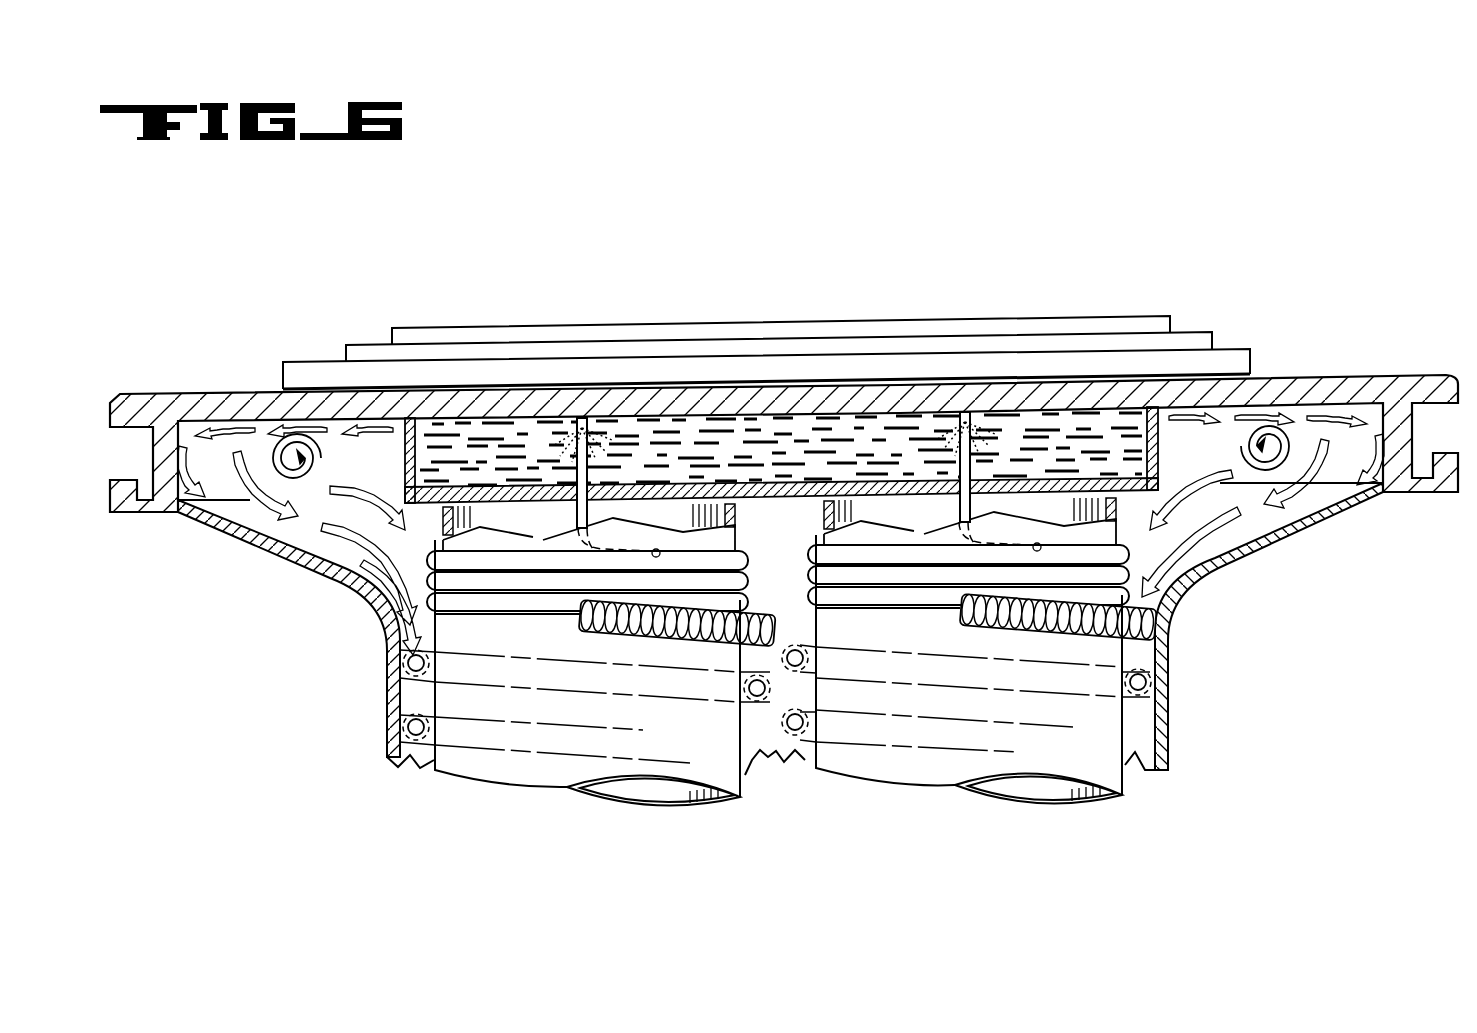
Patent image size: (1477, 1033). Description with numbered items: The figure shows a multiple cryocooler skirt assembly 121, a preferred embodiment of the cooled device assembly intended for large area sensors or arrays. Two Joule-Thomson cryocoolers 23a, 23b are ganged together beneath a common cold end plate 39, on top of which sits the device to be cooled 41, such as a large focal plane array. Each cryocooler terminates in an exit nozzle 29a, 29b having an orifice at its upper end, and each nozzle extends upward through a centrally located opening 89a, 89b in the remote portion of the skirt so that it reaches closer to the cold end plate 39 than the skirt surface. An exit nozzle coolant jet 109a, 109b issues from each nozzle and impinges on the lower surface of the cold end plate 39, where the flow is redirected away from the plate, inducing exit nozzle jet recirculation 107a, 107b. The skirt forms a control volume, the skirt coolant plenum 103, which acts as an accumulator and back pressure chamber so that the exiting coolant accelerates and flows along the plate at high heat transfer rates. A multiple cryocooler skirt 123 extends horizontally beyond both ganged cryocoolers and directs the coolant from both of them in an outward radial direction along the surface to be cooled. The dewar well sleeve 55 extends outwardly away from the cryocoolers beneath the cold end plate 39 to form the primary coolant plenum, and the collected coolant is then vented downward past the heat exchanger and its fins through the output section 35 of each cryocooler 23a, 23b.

The multiple cryocooler skirt assembly 121 is at (262, 326).
The cold end plate 39 is at (238, 440).
The exit nozzle 29a is at (577, 470).
The exit nozzle 29b is at (975, 465).
The device to be cooled 41 is at (777, 304).
The skirt coolant plenum 103 is at (800, 443).
The exit nozzle jet recirculation 107a is at (566, 398).
The exit nozzle jet recirculation 107b is at (993, 398).
The exit nozzle coolant jet 109a is at (580, 400).
The exit nozzle coolant jet 109b is at (968, 400).
The output section 35 is at (800, 547).
The centrally located opening 89a is at (577, 500).
The centrally located opening 89b is at (960, 494).
The Joule-Thomson cryocooler 23a is at (505, 706).
The Joule-Thomson cryocooler 23b is at (925, 706).
The dewar well sleeve 55 is at (355, 730).
The multiple cryocooler skirt 123 is at (1125, 537).